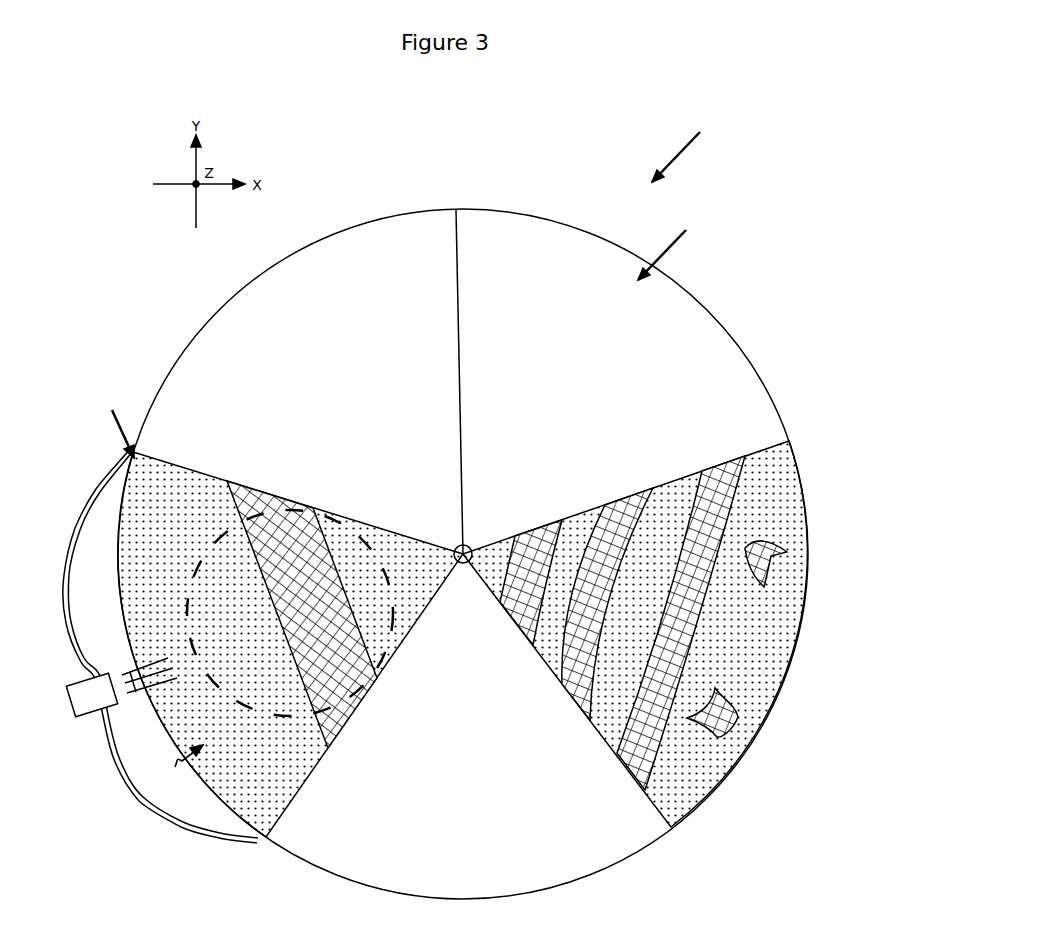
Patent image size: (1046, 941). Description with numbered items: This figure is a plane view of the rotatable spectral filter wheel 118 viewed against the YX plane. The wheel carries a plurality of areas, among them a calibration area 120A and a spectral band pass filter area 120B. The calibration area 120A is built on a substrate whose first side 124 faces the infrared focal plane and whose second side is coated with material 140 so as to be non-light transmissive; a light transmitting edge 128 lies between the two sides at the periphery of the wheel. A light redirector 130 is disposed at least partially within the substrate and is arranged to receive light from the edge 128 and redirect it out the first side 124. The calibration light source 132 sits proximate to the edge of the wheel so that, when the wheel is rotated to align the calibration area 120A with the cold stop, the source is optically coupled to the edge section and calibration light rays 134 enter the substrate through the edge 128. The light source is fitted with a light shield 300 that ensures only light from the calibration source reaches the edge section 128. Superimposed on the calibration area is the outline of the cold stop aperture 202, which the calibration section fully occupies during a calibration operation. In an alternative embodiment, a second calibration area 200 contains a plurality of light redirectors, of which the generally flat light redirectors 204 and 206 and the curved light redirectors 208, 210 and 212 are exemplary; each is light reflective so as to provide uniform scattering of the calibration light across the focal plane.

The spectral filter wheel 118 is at (687, 147).
The calibration area 120A is at (112, 421).
The spectral band pass filter area 120B is at (675, 245).
The first side 124 is at (178, 765).
The light transmitting edge 128 is at (806, 512).
The light redirector 130 is at (258, 494).
The light source 132 is at (91, 694).
The calibration light rays 134 is at (130, 683).
The coating material 140 is at (293, 787).
The calibration area 200 is at (795, 475).
The cold stop aperture 202 is at (358, 537).
The light redirector 204 is at (538, 540).
The light redirector 206 is at (630, 762).
The light redirector 208 is at (573, 680).
The light redirector 210 is at (737, 735).
The light redirector 212 is at (773, 560).
The light shield 300 is at (140, 788).